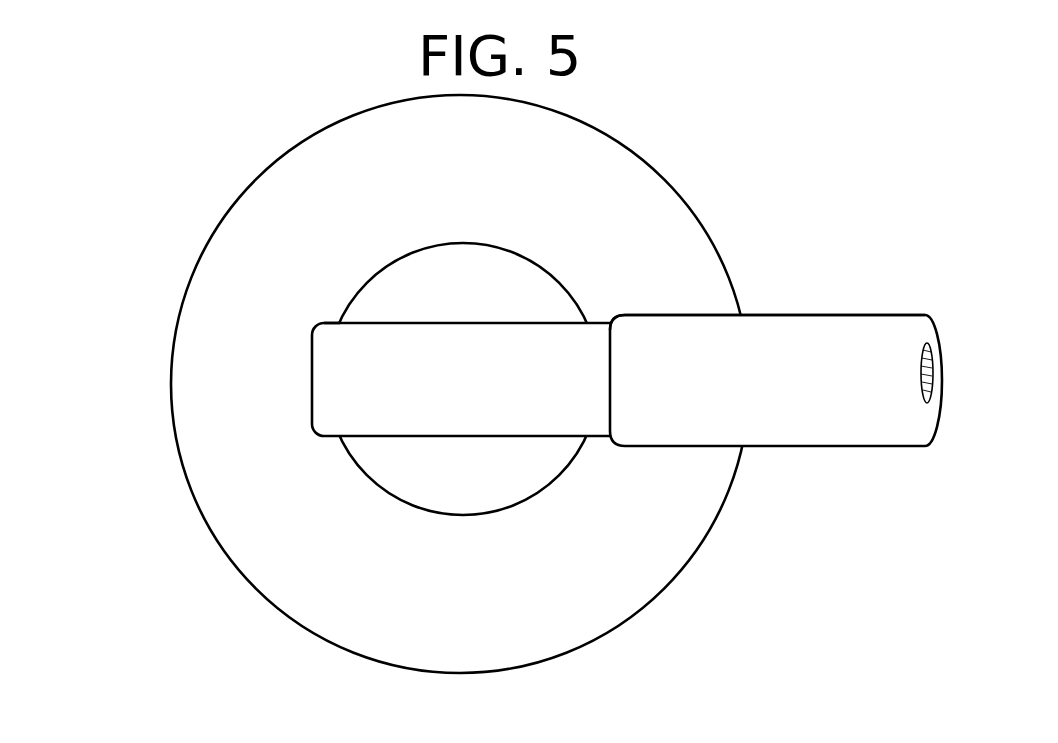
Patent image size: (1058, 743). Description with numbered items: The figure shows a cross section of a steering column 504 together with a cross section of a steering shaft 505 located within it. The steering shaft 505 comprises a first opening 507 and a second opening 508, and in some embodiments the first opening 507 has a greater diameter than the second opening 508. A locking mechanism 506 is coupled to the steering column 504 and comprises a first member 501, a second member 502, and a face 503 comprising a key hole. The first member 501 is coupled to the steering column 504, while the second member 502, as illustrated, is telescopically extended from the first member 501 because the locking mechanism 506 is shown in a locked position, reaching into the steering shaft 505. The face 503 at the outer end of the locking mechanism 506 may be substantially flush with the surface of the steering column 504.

The first member 501 is at (642, 393).
The second member 502 is at (382, 405).
The face 503 is at (919, 413).
The steering column 504 is at (160, 329).
The steering shaft 505 is at (370, 258).
The locking mechanism 506 is at (773, 275).
The first opening 507 is at (595, 310).
The second opening 508 is at (320, 312).